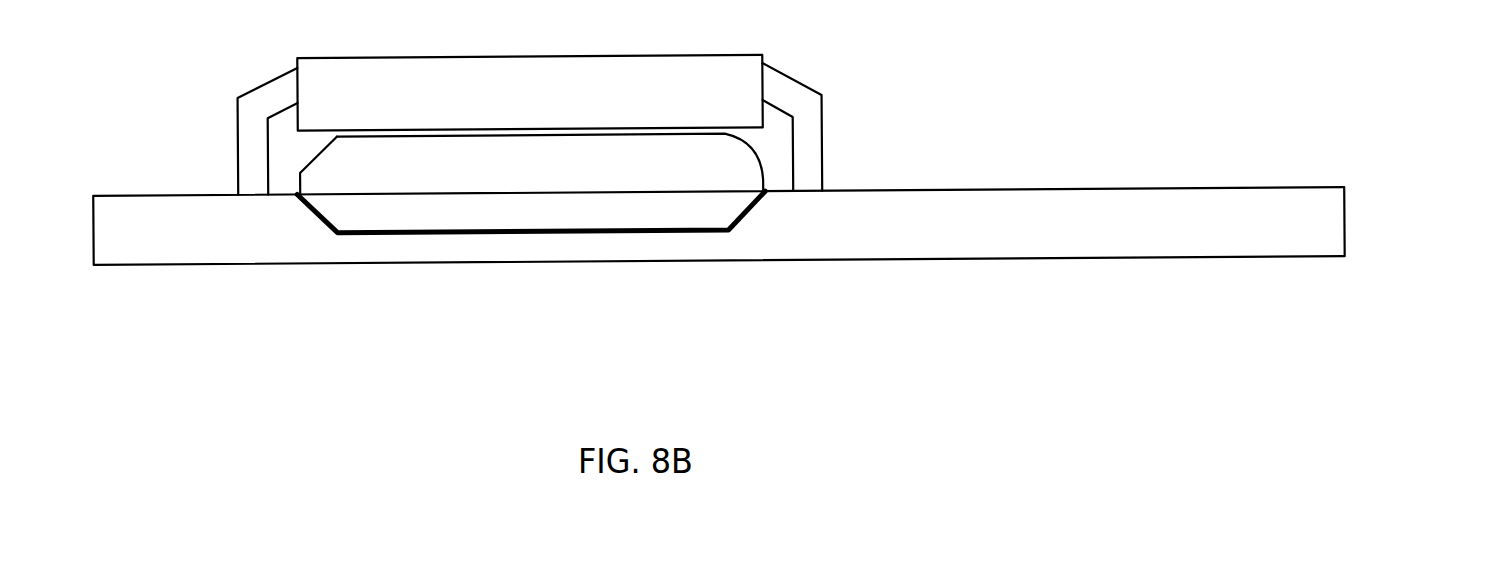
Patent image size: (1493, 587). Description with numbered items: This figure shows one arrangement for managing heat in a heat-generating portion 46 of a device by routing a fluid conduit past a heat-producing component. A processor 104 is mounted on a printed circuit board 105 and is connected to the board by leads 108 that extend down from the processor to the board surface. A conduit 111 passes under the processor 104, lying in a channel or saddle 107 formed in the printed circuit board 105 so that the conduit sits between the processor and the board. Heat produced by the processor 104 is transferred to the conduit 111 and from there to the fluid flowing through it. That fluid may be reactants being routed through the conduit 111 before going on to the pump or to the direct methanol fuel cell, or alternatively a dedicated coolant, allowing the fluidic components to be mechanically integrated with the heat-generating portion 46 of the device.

The heat-generating portion 46 is at (378, 320).
The processor 104 is at (529, 93).
The printed circuit board 105 is at (1344, 229).
The channel or saddle 107 is at (673, 232).
The leads 108 is at (787, 92).
The conduit 111 is at (531, 171).